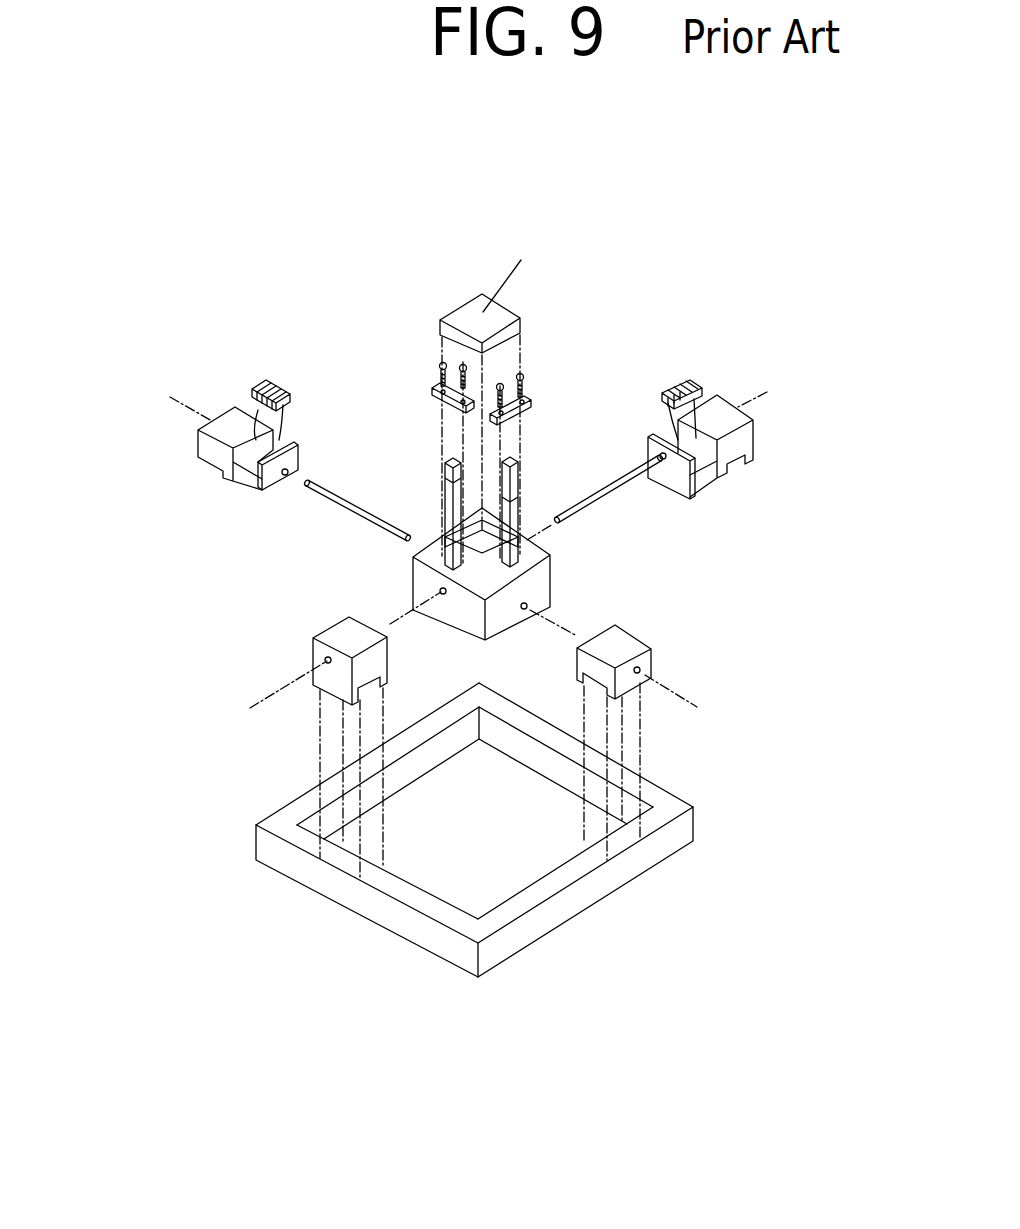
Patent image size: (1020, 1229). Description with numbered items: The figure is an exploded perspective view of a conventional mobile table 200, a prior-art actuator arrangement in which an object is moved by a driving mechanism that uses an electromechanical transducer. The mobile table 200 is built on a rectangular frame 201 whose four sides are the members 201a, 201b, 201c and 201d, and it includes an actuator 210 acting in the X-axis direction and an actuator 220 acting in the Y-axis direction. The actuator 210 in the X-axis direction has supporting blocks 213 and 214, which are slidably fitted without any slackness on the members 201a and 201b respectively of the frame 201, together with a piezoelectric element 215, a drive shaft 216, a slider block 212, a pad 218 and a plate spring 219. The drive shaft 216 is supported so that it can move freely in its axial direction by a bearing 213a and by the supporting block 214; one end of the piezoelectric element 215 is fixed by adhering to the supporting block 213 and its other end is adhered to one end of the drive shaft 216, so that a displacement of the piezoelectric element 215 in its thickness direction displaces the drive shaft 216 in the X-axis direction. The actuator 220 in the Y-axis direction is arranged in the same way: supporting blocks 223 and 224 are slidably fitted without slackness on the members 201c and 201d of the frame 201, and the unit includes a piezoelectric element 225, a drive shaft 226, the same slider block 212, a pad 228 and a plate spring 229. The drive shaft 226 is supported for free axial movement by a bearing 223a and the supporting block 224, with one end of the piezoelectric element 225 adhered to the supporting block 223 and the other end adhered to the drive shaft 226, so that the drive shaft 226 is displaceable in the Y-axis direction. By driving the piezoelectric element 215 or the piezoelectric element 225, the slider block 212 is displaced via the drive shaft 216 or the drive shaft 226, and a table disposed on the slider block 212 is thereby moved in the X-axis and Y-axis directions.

The mobile table 200 is at (506, 1140).
The frame 201 is at (663, 800).
The member of the frame 201a is at (520, 713).
The member of the frame 201b is at (408, 895).
The member of the frame 201c is at (450, 715).
The member of the frame 201d is at (562, 878).
The actuator in X-axis direction 210 is at (688, 541).
The slider block 212 is at (556, 598).
The supporting block 213 is at (755, 445).
The bearing 213a is at (700, 486).
The supporting block 214 is at (313, 656).
The piezoelectric element 215 is at (680, 385).
The drive shaft 216 is at (622, 487).
The pad 218 is at (446, 463).
The plate spring 219 is at (433, 390).
The actuator in Y-axis direction 220 is at (290, 534).
The supporting block 223 is at (208, 456).
The bearing 223a is at (240, 473).
The supporting block 224 is at (653, 662).
The piezoelectric element 225 is at (270, 383).
The drive shaft 226 is at (343, 498).
The pad 228 is at (521, 472).
The plate spring 229 is at (530, 405).